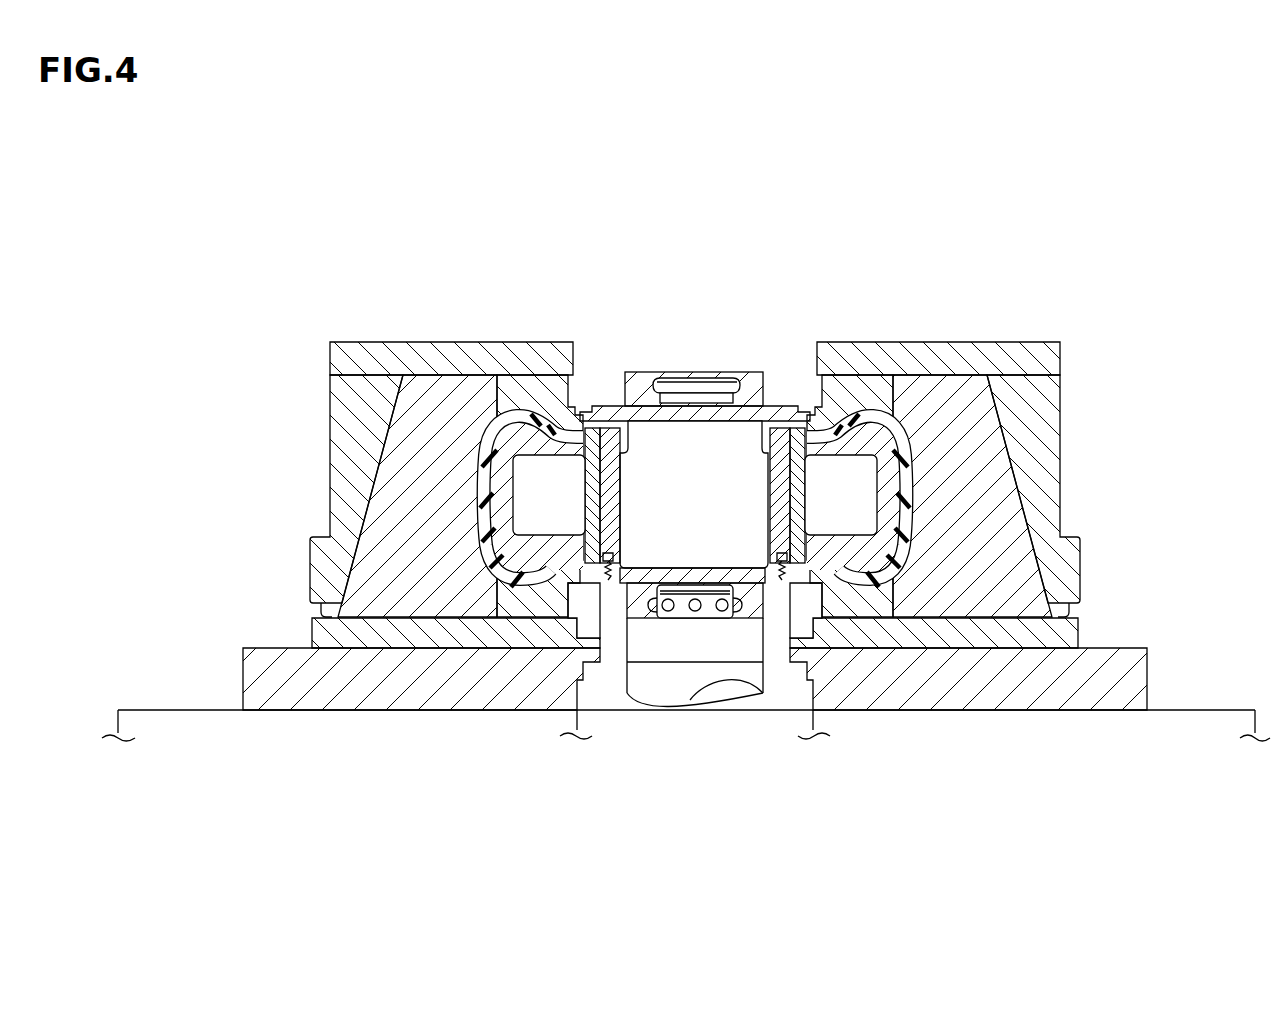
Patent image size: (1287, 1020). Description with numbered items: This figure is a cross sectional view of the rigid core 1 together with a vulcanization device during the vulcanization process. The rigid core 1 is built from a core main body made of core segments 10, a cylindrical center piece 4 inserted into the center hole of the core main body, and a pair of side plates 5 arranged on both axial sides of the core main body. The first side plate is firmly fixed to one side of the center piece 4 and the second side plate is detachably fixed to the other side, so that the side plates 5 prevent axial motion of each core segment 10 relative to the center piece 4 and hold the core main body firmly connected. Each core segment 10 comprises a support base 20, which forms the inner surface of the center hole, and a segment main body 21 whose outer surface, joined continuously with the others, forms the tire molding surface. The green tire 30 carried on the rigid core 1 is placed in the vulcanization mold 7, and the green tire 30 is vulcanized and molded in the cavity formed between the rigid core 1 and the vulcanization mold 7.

The rigid core 1 is at (815, 535).
The center piece 4 is at (1128, 364).
The side plates 5 is at (750, 390).
The vulcanization mold 7 is at (405, 442).
The core segment 10 is at (815, 505).
The support base 20 is at (593, 445).
The segment main body 21 is at (515, 437).
The green tire 30 is at (905, 515).